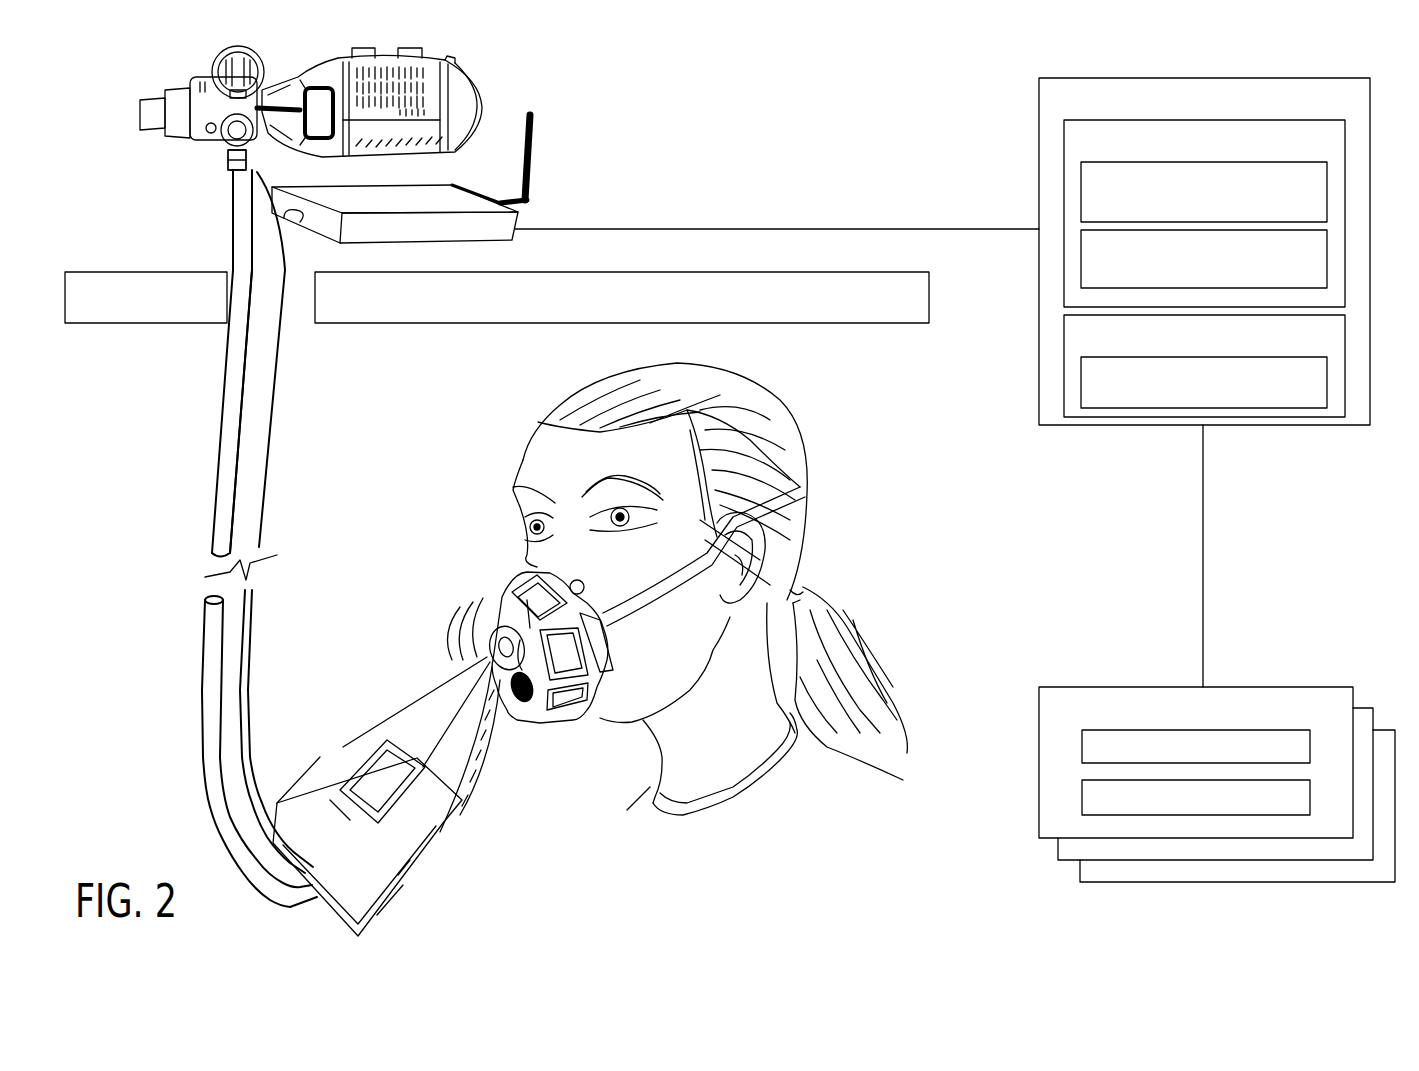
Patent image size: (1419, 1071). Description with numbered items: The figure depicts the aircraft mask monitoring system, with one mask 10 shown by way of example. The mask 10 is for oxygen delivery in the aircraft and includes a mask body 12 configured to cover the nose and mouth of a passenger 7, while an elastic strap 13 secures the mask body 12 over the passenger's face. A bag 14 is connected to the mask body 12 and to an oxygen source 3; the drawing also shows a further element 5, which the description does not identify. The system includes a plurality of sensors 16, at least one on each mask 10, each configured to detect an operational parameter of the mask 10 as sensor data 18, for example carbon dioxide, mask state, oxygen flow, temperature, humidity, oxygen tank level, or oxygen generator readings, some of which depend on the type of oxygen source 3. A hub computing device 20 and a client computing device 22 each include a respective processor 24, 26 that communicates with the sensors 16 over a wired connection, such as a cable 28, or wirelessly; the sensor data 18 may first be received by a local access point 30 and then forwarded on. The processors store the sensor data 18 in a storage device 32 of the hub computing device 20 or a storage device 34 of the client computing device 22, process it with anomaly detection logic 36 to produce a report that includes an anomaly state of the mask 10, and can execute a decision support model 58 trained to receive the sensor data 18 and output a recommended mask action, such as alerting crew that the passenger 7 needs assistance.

The oxygen source 3 is at (475, 73).
The oxygen tube 5 is at (223, 447).
The passenger 7 is at (807, 443).
The mask 10 is at (1395, 98).
The mask body 12 is at (522, 720).
The elastic strap 13 is at (660, 593).
The bag 14 is at (347, 747).
The sensor 16 is at (223, 165).
The sensor data 18 is at (1283, 394).
The hub computing device 20 is at (1332, 109).
The client computing device 22 is at (1338, 721).
The processor 24 is at (1275, 152).
The processor 26 is at (1268, 757).
The cable 28 is at (273, 440).
The local access point 30 is at (518, 230).
The storage device 32 is at (1298, 347).
The storage device 34 is at (1293, 809).
The anomaly detection logic 36 is at (1248, 216).
The decision support model 58 is at (1252, 284).